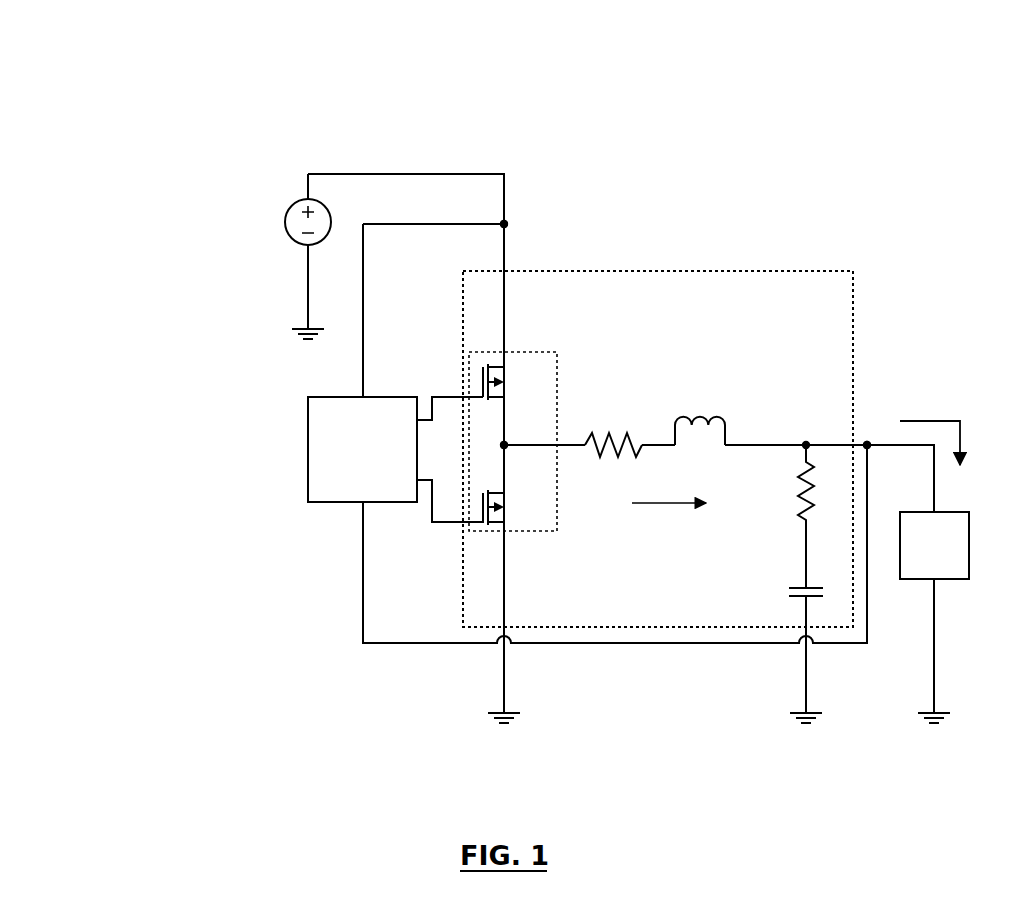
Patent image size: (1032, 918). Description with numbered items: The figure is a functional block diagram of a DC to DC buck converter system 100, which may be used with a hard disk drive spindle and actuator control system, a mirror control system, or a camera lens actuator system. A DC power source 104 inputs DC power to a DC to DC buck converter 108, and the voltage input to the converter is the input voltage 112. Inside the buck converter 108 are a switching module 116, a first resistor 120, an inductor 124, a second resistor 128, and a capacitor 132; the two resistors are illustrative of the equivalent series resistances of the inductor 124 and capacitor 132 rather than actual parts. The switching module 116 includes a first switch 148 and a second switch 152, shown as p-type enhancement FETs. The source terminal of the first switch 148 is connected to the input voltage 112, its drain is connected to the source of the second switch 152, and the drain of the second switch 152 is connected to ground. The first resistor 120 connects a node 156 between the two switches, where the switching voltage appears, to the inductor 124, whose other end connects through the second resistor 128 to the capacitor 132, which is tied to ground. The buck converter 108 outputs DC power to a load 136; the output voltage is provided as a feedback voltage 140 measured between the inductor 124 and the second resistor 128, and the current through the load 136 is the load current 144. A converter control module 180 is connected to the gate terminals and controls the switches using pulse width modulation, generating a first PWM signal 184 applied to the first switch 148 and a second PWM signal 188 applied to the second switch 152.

The buck converter system 100 is at (100, 45).
The DC power source 104 is at (296, 203).
The DC to DC buck converter 108 is at (727, 271).
The input voltage 112 is at (509, 222).
The switching module 116 is at (557, 388).
The first resistor 120 is at (631, 437).
The inductor 124 is at (727, 421).
The second resistor 128 is at (794, 500).
The capacitor 132 is at (789, 588).
The load 136 is at (969, 548).
The feedback voltage 140 is at (868, 442).
The load current 144 is at (951, 421).
The first switch 148 is at (530, 367).
The second switch 152 is at (525, 512).
The node 156 is at (506, 446).
The converter control module 180 is at (308, 449).
The first PWM signal 184 is at (432, 416).
The second PWM signal 188 is at (432, 524).